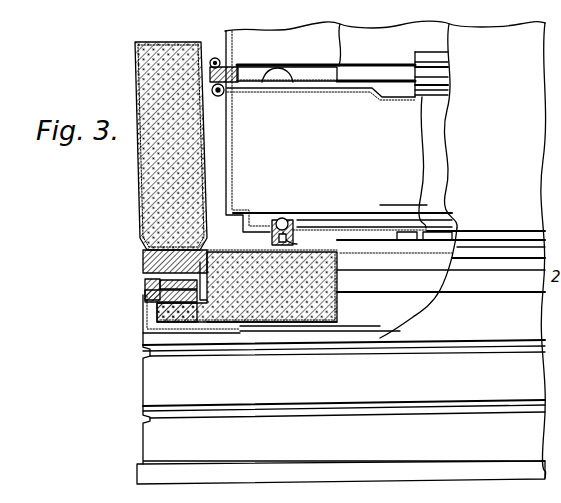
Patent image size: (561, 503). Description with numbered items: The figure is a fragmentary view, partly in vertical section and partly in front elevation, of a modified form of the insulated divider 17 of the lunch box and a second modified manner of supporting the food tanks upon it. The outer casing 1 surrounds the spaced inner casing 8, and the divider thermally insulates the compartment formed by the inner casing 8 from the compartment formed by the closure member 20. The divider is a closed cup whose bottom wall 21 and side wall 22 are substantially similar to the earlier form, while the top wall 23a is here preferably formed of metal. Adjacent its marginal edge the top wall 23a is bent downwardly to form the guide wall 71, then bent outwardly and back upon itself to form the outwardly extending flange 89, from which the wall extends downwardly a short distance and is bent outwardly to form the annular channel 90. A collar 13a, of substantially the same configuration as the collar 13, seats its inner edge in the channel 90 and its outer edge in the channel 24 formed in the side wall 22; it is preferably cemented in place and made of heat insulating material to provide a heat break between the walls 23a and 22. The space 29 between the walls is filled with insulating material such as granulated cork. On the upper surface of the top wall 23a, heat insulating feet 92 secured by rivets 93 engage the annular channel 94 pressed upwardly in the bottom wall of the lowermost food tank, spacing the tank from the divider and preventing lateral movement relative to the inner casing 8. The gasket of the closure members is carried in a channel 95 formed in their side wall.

The outer casing 1 is at (139, 170).
The inner casing 8 is at (206, 113).
The collar 13 is at (146, 264).
The collar 13a is at (145, 296).
The insulated divider 17 is at (255, 311).
The closure member 20 is at (141, 382).
The bottom wall 21 is at (301, 318).
The side wall 22 is at (147, 321).
The top wall 23a is at (389, 147).
The channel 24 is at (145, 285).
The space 29 is at (338, 257).
The guide wall 71 is at (295, 287).
The outwardly extending flange 89 is at (247, 286).
The annular channel 90 is at (247, 304).
The feet 92 is at (284, 222).
The rivets 93 is at (278, 232).
The annular channel 94 is at (288, 69).
The channel 95 is at (231, 64).